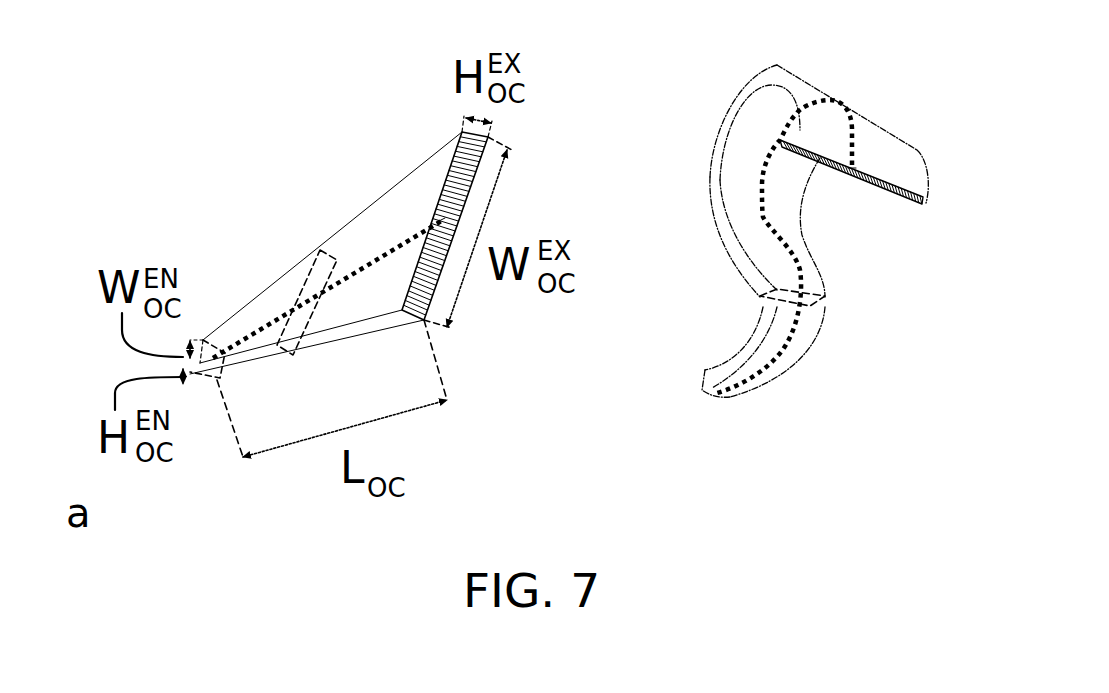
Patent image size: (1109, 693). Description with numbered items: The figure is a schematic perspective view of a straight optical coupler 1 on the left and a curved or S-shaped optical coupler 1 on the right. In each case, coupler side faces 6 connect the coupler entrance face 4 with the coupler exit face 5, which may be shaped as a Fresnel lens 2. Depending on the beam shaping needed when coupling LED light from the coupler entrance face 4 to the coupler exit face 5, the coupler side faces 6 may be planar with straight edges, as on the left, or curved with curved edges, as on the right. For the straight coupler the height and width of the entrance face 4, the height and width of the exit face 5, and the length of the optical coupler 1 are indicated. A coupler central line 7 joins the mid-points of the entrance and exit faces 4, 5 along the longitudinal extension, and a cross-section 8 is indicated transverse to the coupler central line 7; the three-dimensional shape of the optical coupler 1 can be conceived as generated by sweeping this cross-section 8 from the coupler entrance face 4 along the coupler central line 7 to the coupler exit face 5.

The optical coupler 1 is at (413, 170).
The Fresnel lens 2 is at (457, 175).
The coupler entrance face 4 is at (223, 368).
The coupler exit face 5 is at (433, 213).
The coupler side faces 6 is at (233, 368).
The coupler central line 7 is at (375, 262).
The cross-section 8 is at (303, 282).